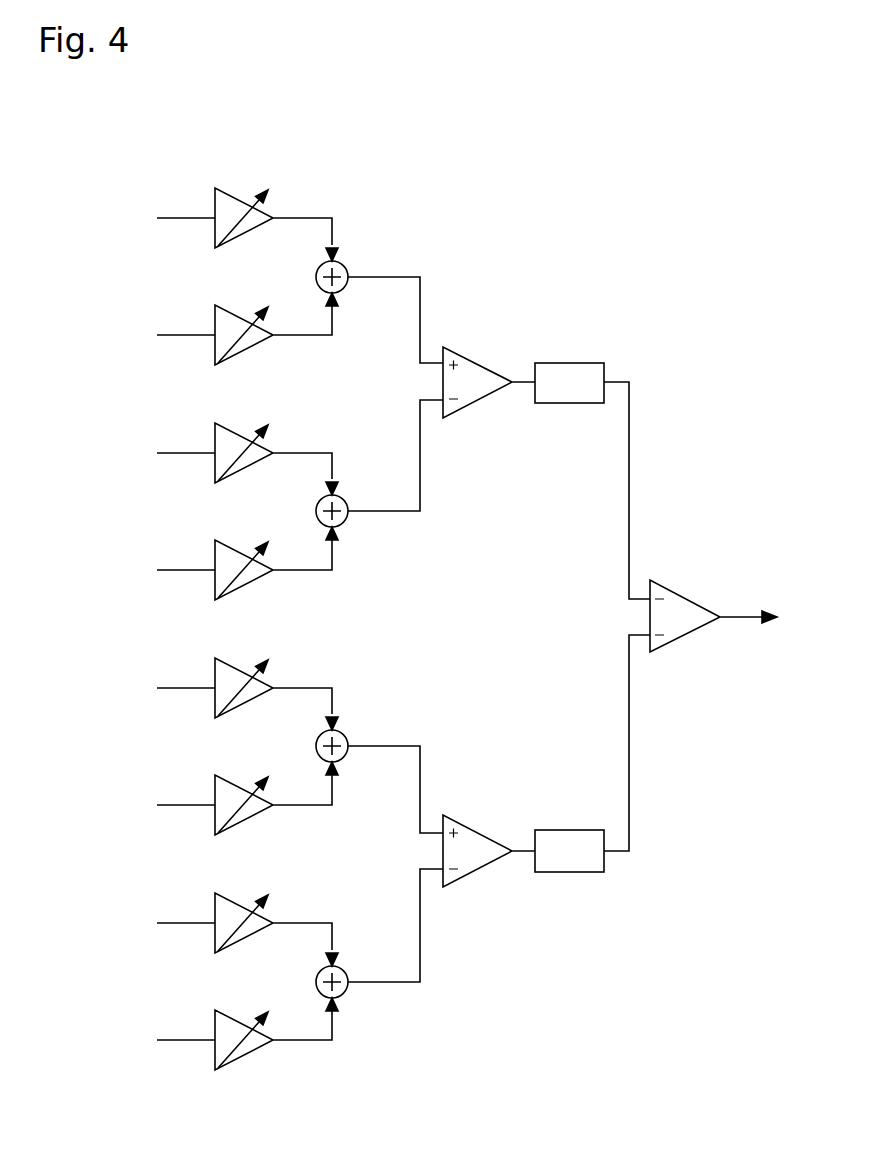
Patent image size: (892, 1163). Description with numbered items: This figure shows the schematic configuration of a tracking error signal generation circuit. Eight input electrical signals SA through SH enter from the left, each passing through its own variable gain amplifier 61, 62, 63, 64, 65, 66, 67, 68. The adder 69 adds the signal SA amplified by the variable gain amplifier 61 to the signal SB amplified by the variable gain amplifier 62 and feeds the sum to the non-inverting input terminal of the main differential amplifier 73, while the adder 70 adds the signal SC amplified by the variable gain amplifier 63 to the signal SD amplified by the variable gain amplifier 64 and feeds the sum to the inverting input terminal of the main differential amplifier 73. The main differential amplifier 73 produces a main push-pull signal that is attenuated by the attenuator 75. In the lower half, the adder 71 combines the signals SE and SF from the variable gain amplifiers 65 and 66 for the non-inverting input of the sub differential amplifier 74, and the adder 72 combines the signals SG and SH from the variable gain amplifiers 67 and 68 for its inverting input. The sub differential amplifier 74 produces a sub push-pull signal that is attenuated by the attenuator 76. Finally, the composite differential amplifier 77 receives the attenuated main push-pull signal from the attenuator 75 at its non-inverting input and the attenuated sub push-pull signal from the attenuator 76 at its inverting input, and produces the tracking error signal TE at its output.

The variable gain amplifier 61 is at (243, 196).
The variable gain amplifier 62 is at (243, 313).
The variable gain amplifier 63 is at (243, 431).
The variable gain amplifier 64 is at (243, 548).
The variable gain amplifier 65 is at (243, 666).
The variable gain amplifier 66 is at (243, 783).
The variable gain amplifier 67 is at (243, 901).
The variable gain amplifier 68 is at (243, 1018).
The adder 69 is at (345, 266).
The adder 70 is at (345, 500).
The adder 71 is at (345, 735).
The adder 72 is at (345, 971).
The main differential amplifier 73 is at (480, 359).
The sub differential amplifier 74 is at (480, 828).
The attenuator 75 is at (573, 361).
The attenuator 76 is at (573, 828).
The composite differential amplifier 77 is at (689, 592).